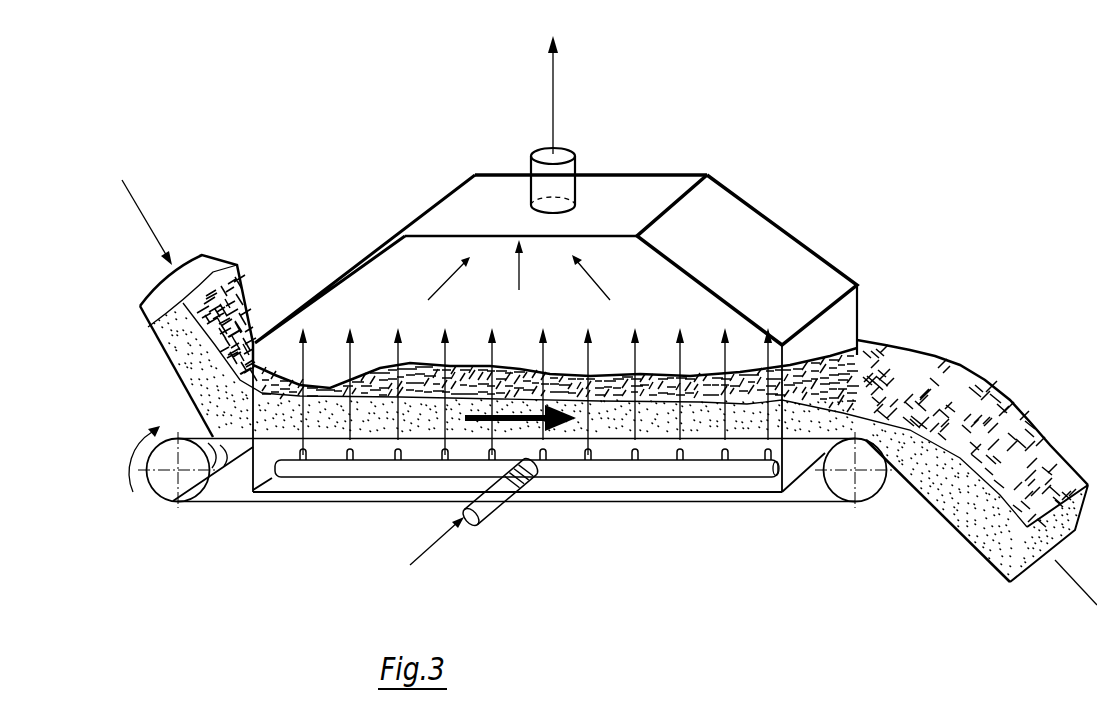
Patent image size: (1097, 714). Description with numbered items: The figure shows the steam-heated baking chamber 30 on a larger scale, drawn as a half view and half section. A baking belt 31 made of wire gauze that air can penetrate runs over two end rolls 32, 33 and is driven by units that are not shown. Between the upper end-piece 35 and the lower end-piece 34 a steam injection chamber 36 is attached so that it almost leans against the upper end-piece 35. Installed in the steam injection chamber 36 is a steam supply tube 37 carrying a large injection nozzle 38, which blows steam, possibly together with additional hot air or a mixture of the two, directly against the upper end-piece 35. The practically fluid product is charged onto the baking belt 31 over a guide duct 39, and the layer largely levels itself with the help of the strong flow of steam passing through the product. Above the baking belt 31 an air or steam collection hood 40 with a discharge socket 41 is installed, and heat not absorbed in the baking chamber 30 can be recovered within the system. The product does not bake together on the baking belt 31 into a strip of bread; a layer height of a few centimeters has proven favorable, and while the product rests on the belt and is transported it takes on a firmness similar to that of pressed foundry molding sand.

The baking chamber 30 is at (658, 292).
The baking belt 31 is at (290, 501).
The end roll 32 is at (170, 487).
The end roll 33 is at (868, 480).
The lower end-piece 34 is at (362, 501).
The upper end-piece 35 is at (253, 447).
The steam injection chamber 36 is at (725, 480).
The steam supply tube 37 is at (487, 503).
The injection nozzle 38 is at (588, 458).
The guide duct 39 is at (180, 377).
The air or steam collection hood 40 is at (837, 267).
The discharge socket 41 is at (568, 182).